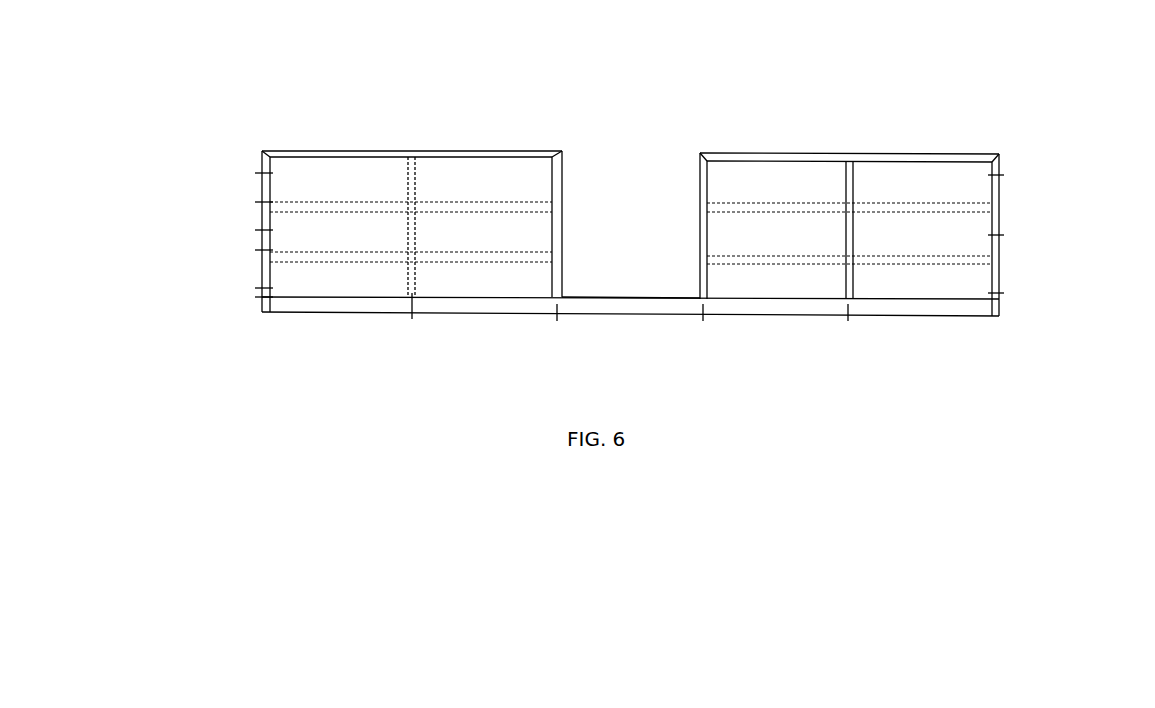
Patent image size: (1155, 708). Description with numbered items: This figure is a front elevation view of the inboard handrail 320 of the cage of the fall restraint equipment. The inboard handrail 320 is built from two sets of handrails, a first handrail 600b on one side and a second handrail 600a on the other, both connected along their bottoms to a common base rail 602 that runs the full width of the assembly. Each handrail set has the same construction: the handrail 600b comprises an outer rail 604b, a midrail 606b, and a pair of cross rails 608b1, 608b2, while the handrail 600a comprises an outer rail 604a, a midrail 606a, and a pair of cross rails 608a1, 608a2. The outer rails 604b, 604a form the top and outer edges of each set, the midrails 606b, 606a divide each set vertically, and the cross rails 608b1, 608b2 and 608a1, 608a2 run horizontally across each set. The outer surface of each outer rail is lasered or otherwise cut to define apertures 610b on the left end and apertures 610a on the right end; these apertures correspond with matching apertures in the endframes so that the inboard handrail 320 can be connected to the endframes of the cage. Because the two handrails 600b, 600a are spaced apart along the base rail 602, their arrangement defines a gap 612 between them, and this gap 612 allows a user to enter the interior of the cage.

The inboard handrail 320 is at (877, 81).
The base rail 602 is at (486, 318).
The aperture 610b is at (255, 288).
The aperture 610a is at (1004, 293).
The handrail 600b is at (378, 148).
The outer rail 604b is at (500, 153).
The midrail 606b is at (407, 185).
The cross rail 608b1 is at (433, 205).
The cross rail 608b2 is at (433, 258).
The gap 612 is at (633, 233).
The handrail 600a is at (752, 150).
The outer rail 604a is at (880, 155).
The midrail 606a is at (852, 243).
The cross rail 608a1 is at (872, 204).
The cross rail 608a2 is at (745, 255).